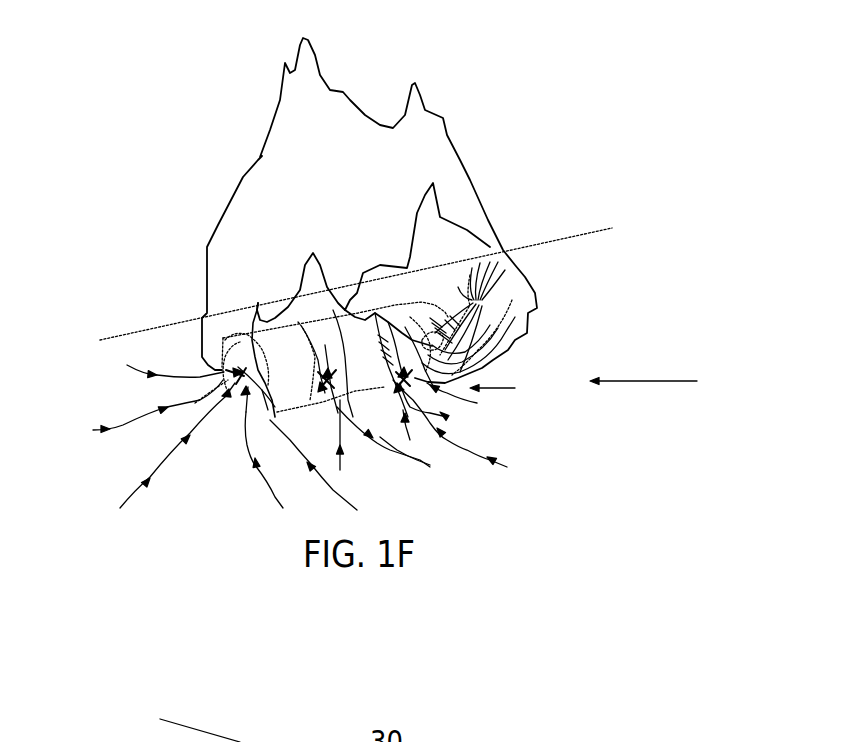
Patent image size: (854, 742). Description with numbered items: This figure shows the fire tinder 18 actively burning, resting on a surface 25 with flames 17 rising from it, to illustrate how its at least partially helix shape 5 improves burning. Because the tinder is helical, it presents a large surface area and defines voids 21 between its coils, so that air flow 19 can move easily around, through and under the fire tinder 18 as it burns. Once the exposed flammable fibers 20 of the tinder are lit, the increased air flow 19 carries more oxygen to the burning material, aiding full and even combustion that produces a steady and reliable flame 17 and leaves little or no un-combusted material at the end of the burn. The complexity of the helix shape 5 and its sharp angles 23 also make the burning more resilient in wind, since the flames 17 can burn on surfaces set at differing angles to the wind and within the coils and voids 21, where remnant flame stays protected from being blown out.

The flames 17 is at (272, 167).
The sharp angles 23 is at (330, 357).
The surface 25 is at (582, 240).
The voids 21 is at (305, 348).
The exposed flammable fibers 20 is at (480, 298).
The at least partially helix shape 5 is at (502, 387).
The fire tinder 18 is at (665, 379).
The air flow 19 is at (277, 500).